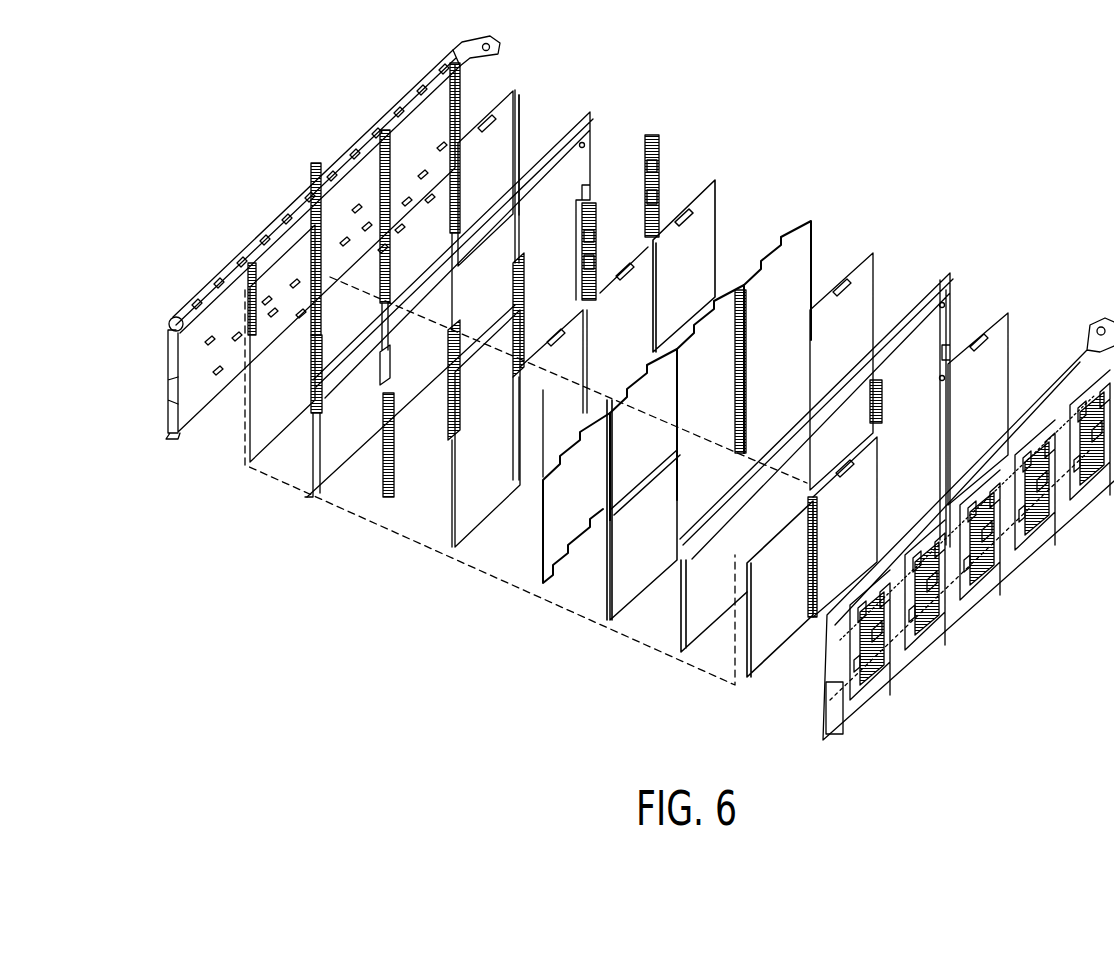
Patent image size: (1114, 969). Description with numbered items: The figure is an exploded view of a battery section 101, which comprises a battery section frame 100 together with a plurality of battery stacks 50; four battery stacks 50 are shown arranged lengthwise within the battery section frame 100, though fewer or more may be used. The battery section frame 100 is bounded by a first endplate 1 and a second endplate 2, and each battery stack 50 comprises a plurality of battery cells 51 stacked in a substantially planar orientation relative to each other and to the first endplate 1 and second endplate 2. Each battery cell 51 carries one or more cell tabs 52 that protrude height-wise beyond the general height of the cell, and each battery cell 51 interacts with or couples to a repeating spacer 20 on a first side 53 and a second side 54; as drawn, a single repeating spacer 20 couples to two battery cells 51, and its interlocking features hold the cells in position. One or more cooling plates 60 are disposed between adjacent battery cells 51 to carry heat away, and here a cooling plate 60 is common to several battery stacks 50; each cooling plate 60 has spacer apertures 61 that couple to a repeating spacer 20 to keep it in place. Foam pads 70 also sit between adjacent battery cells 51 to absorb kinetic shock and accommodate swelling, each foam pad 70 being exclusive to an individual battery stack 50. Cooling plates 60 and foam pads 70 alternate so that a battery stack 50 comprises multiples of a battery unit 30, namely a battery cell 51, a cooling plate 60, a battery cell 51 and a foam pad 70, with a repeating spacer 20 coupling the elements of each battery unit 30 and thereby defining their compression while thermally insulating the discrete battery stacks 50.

The first endplate 1 is at (412, 86).
The second endplate 2 is at (917, 660).
The repeating spacer 20 is at (388, 497).
The battery unit 30 is at (652, 702).
The battery stack 50 is at (308, 518).
The battery cell 51 is at (260, 437).
The cell tab 52 is at (482, 112).
The first side 53 is at (744, 405).
The second side 54 is at (872, 311).
The cooling plate 60 is at (585, 112).
The spacer aperture 61 is at (519, 225).
The foam pad 70 is at (790, 265).
The battery section frame 100 is at (1033, 335).
The battery section 101 is at (990, 160).